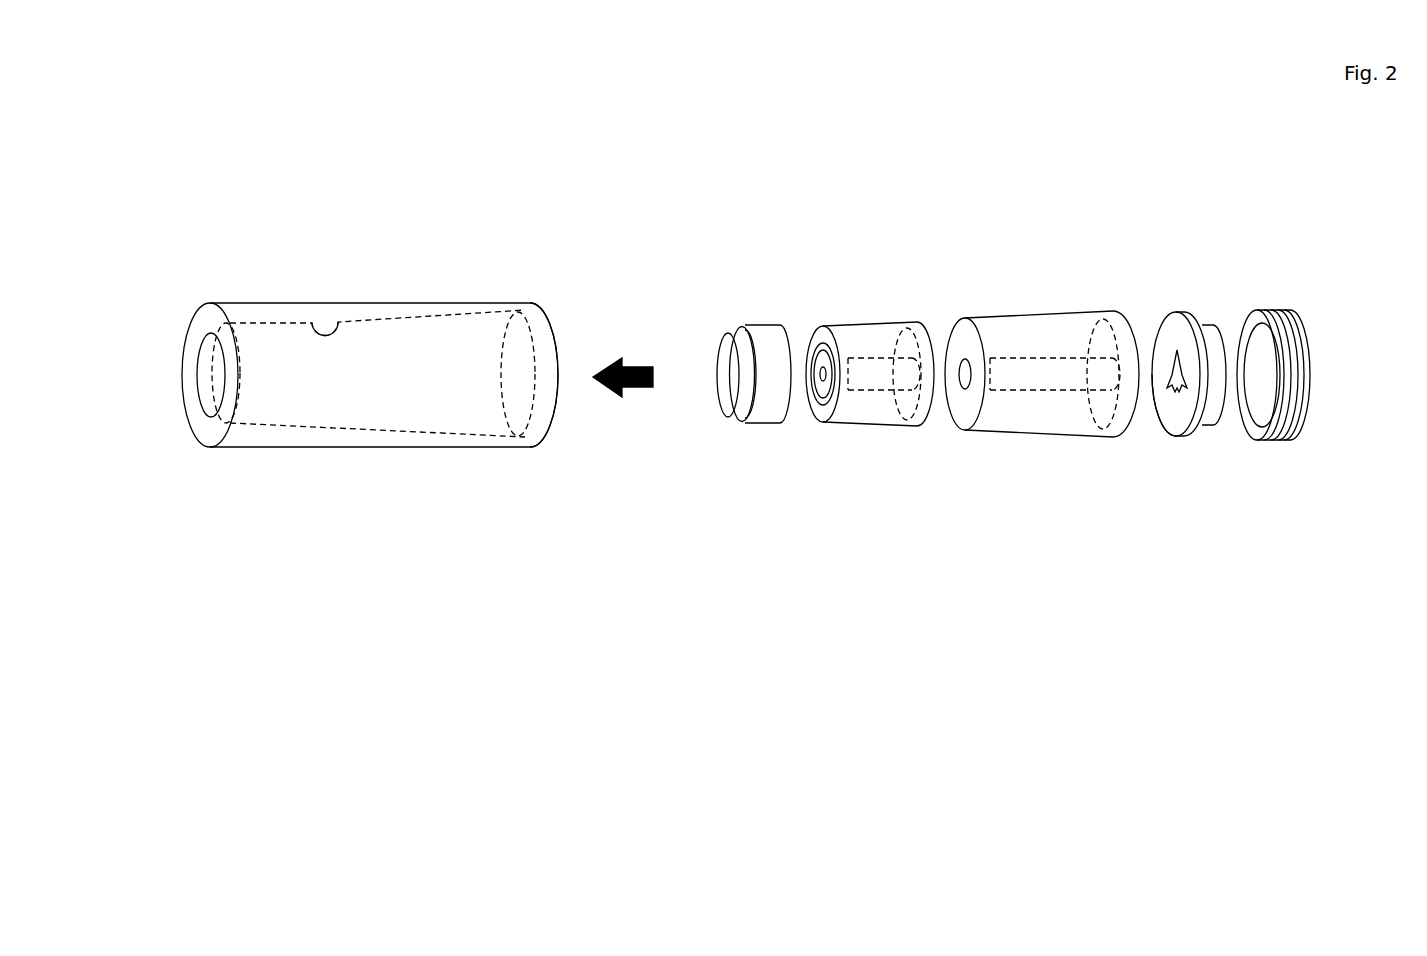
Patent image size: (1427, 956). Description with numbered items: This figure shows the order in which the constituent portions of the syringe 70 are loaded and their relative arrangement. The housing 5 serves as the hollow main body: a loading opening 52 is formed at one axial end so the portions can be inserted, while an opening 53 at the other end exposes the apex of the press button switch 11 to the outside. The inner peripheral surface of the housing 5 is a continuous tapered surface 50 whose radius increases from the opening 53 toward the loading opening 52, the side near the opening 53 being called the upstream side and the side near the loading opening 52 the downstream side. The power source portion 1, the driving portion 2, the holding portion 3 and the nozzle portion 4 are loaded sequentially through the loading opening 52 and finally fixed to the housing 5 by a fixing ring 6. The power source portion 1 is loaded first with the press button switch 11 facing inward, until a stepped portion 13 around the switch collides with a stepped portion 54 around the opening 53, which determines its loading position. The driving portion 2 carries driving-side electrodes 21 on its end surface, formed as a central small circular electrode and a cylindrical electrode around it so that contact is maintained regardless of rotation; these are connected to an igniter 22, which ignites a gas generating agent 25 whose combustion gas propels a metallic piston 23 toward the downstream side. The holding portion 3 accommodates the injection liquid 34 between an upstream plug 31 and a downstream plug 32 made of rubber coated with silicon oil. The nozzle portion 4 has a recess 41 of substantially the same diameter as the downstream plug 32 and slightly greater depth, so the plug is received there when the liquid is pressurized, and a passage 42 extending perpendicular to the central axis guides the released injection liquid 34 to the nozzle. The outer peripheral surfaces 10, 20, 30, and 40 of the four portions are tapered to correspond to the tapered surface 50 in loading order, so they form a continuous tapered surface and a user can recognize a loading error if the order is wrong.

The syringe 70 is at (542, 585).
The housing 5 is at (187, 362).
The tapered surface 50 is at (340, 325).
The loading opening 52 is at (530, 357).
The opening 53 is at (207, 370).
The stepped portion 54 is at (223, 332).
The power source portion 1 is at (730, 510).
The outer peripheral surface 10 is at (758, 423).
The press button switch 11 is at (730, 347).
The stepped portion 13 is at (738, 333).
The driving portion 2 is at (915, 510).
The outer peripheral surface 20 is at (870, 425).
The driving-side electrodes 21 is at (823, 378).
The igniter 22 is at (847, 360).
The piston 23 is at (913, 365).
The gas generating agent 25 is at (870, 378).
The holding portion 3 is at (1117, 510).
The outer peripheral surface 30 is at (1040, 437).
The upstream plug 31 is at (977, 362).
The downstream plug 32 is at (1107, 373).
The injection liquid 34 is at (1042, 380).
The nozzle portion 4 is at (1175, 510).
The outer peripheral surface 40 is at (1178, 313).
The recess 41 is at (1172, 390).
The passage 42 is at (1178, 350).
The fixing ring 6 is at (1283, 437).